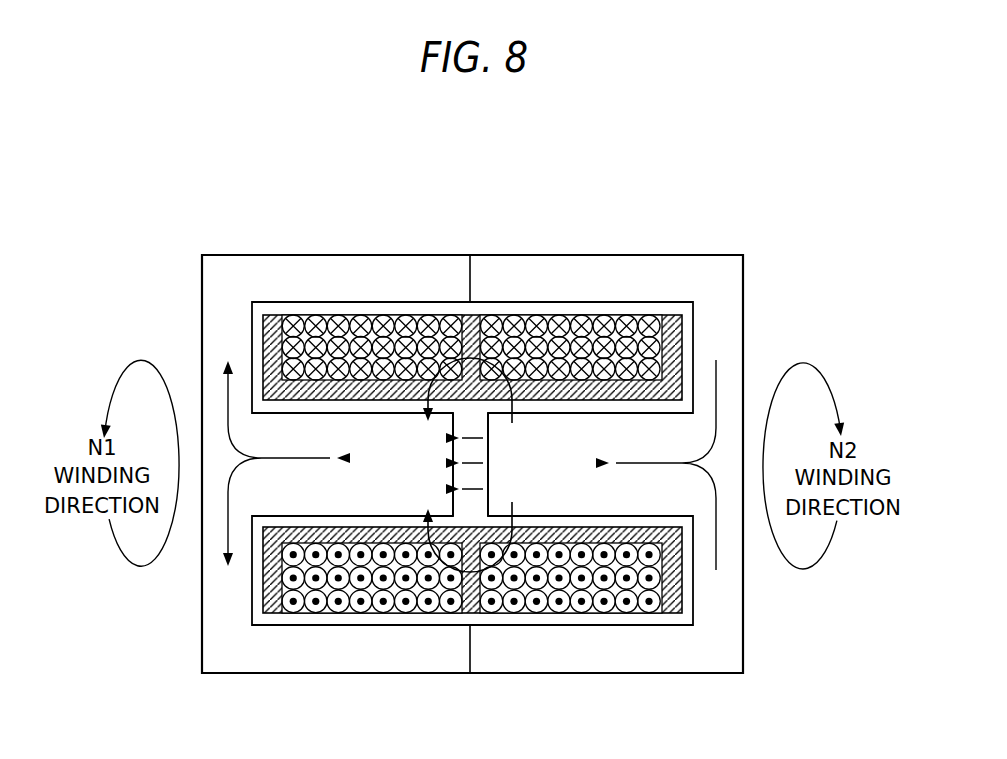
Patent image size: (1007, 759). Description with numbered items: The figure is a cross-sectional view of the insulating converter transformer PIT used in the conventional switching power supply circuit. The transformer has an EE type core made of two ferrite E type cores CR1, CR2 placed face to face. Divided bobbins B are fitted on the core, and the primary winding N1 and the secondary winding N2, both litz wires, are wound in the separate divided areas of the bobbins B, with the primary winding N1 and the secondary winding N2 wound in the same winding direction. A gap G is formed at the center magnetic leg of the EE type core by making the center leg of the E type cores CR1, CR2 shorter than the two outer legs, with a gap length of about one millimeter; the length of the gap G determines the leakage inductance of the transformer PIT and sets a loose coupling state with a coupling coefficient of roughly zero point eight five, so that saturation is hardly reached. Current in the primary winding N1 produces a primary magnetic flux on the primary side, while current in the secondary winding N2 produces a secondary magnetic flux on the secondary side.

The E type core CR1 is at (237, 254).
The E type core CR2 is at (708, 254).
The insulating converter transformer PIT is at (472, 240).
The divided bobbin B is at (680, 322).
The gap G is at (483, 462).
The primary winding N1 is at (360, 306).
The secondary winding N2 is at (581, 306).